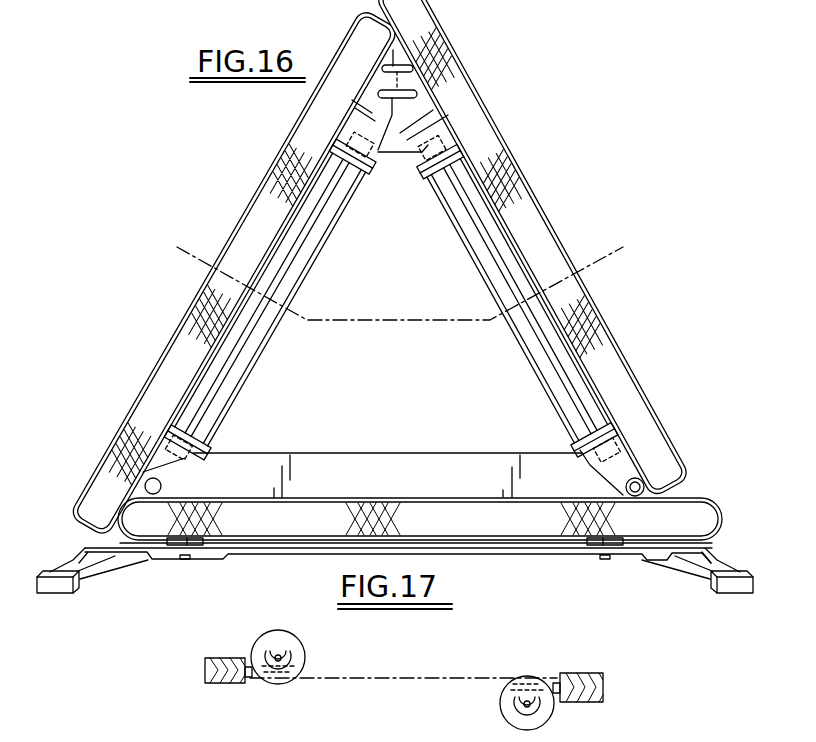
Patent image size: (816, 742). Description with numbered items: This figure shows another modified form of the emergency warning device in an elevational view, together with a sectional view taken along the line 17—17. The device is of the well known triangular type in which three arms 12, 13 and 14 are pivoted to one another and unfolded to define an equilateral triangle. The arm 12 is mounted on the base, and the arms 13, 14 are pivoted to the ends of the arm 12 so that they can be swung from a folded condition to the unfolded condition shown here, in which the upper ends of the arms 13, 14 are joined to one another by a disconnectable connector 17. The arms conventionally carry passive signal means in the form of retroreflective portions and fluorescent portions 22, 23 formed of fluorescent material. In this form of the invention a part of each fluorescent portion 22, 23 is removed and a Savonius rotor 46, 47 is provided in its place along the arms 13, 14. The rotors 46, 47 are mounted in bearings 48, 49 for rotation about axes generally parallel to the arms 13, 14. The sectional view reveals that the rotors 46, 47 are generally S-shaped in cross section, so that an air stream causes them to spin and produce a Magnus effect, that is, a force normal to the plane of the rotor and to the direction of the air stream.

In FIG. 16, the arm 12 is at (407, 485).
In FIG. 16, the arm 13 is at (195, 347).
In FIG. 17, the arm 13 is at (227, 652).
In FIG. 16, the arm 14 is at (573, 308).
In FIG. 17, the arm 14 is at (582, 670).
In FIG. 16, the disconnectable connector 17 is at (218, 220).
In FIG. 16, the fluorescent portion 22 is at (360, 121).
In FIG. 16, the fluorescent portion 23 is at (418, 110).
In FIG. 16, the Savonius rotor 46 is at (252, 350).
In FIG. 17, the Savonius rotor 46 is at (297, 643).
In FIG. 16, the Savonius rotor 47 is at (545, 370).
In FIG. 17, the Savonius rotor 47 is at (520, 690).
In FIG. 16, the bearing 48 is at (433, 142).
In FIG. 16, the bearing 49 is at (197, 466).